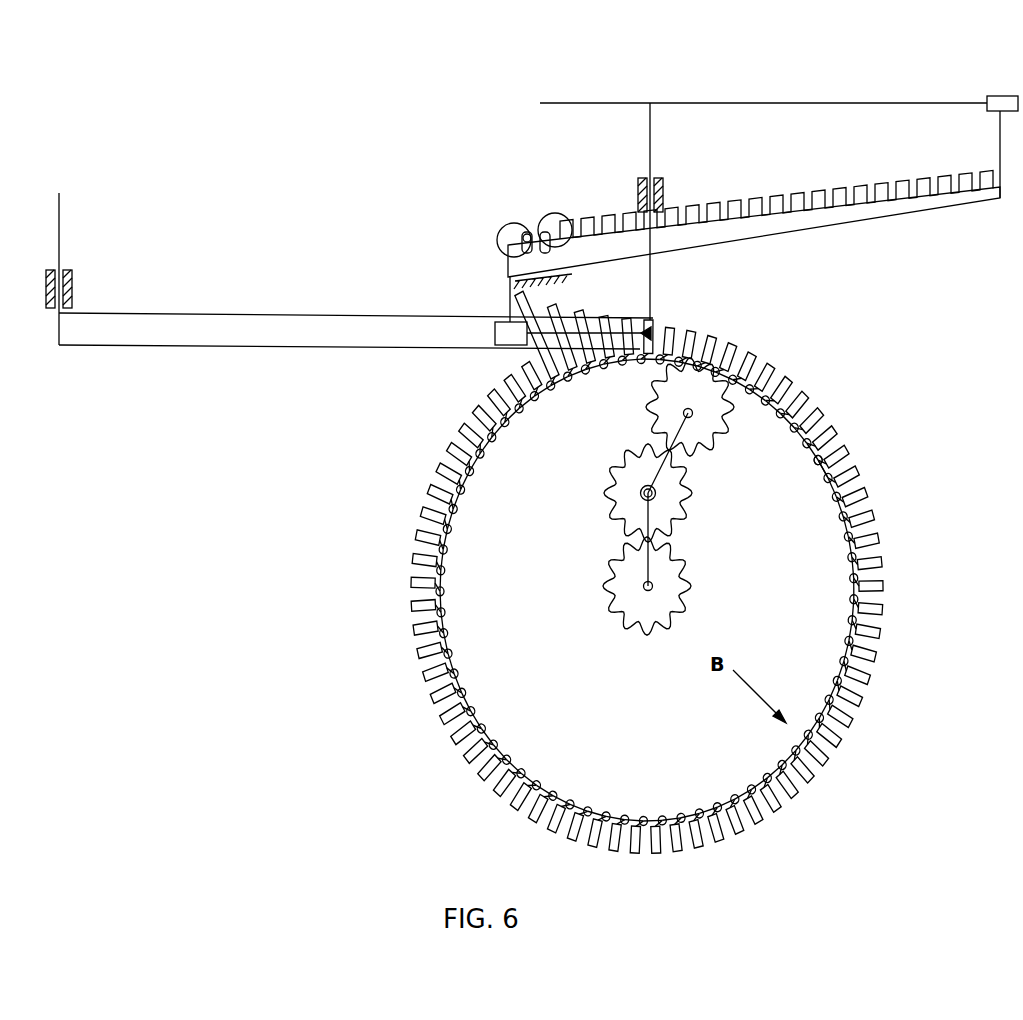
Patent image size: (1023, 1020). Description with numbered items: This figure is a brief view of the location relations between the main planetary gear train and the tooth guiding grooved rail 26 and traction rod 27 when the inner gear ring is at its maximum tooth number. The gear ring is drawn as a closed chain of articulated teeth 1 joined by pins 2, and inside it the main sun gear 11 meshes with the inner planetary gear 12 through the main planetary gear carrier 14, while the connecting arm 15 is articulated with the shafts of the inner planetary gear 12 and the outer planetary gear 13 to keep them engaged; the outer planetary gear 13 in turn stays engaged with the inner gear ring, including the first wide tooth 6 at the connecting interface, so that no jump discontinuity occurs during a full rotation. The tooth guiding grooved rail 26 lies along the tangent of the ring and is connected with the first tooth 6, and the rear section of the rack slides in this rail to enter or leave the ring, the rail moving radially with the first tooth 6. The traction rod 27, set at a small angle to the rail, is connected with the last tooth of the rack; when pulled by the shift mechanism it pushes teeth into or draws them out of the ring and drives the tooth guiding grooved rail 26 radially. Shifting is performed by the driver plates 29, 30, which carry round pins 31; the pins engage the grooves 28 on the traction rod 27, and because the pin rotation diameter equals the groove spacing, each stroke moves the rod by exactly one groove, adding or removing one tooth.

The chain 1 is at (840, 432).
The chain link pin 2 is at (815, 460).
The first tooth 6 is at (652, 317).
The main sun gear 11 is at (672, 572).
The inner planetary gear 12 is at (678, 498).
The outer planetary gear 13 is at (712, 432).
The main planetary gear carrier 14 is at (640, 530).
The connecting arm 15 is at (655, 445).
The tooth guiding grooved rail 26 is at (285, 313).
The traction rod 27 is at (748, 240).
The grooves 28 is at (773, 194).
The driver plate 29 is at (558, 213).
The driver plate 30 is at (498, 226).
The round pins 31 is at (524, 230).